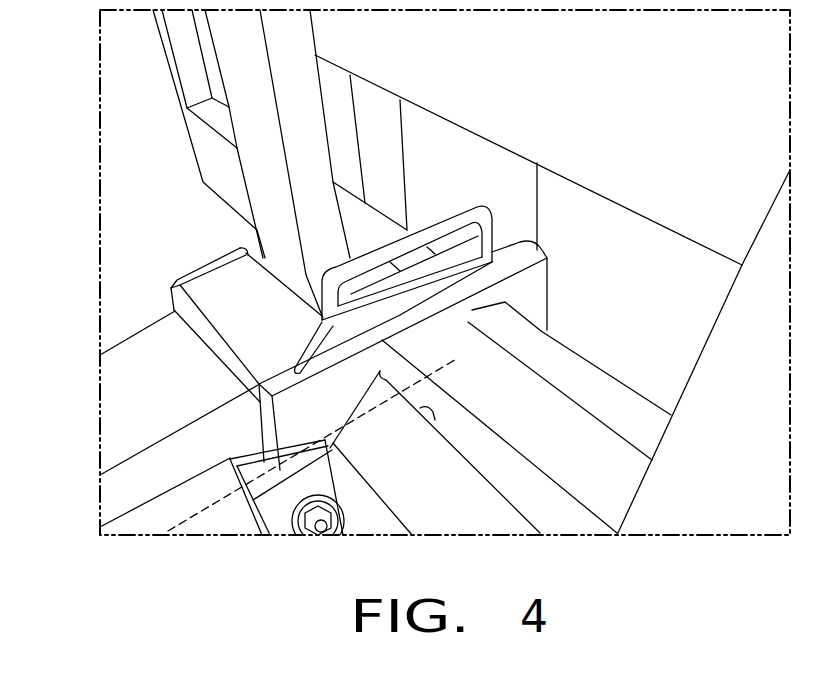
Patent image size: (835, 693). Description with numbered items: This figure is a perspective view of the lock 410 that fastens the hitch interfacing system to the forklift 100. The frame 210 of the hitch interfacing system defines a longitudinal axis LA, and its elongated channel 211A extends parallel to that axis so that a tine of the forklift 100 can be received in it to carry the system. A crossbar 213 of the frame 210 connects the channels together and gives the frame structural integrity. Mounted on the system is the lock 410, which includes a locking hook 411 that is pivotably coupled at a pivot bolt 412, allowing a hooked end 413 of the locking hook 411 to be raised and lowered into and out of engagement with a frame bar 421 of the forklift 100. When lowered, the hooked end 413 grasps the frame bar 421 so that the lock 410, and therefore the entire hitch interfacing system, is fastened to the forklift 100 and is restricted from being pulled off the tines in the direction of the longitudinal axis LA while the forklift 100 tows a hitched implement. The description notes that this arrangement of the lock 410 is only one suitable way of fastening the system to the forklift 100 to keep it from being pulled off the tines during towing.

The forklift 100 is at (148, 64).
The frame 210 is at (117, 288).
The channel 211A is at (137, 342).
The crossbar 213 is at (213, 268).
The lock 410 is at (380, 413).
The locking hook 411 is at (477, 313).
The pivot bolt 412 is at (328, 535).
The hooked end 413 is at (548, 270).
The frame bar 421 is at (527, 377).
The longitudinal axis LA is at (313, 469).